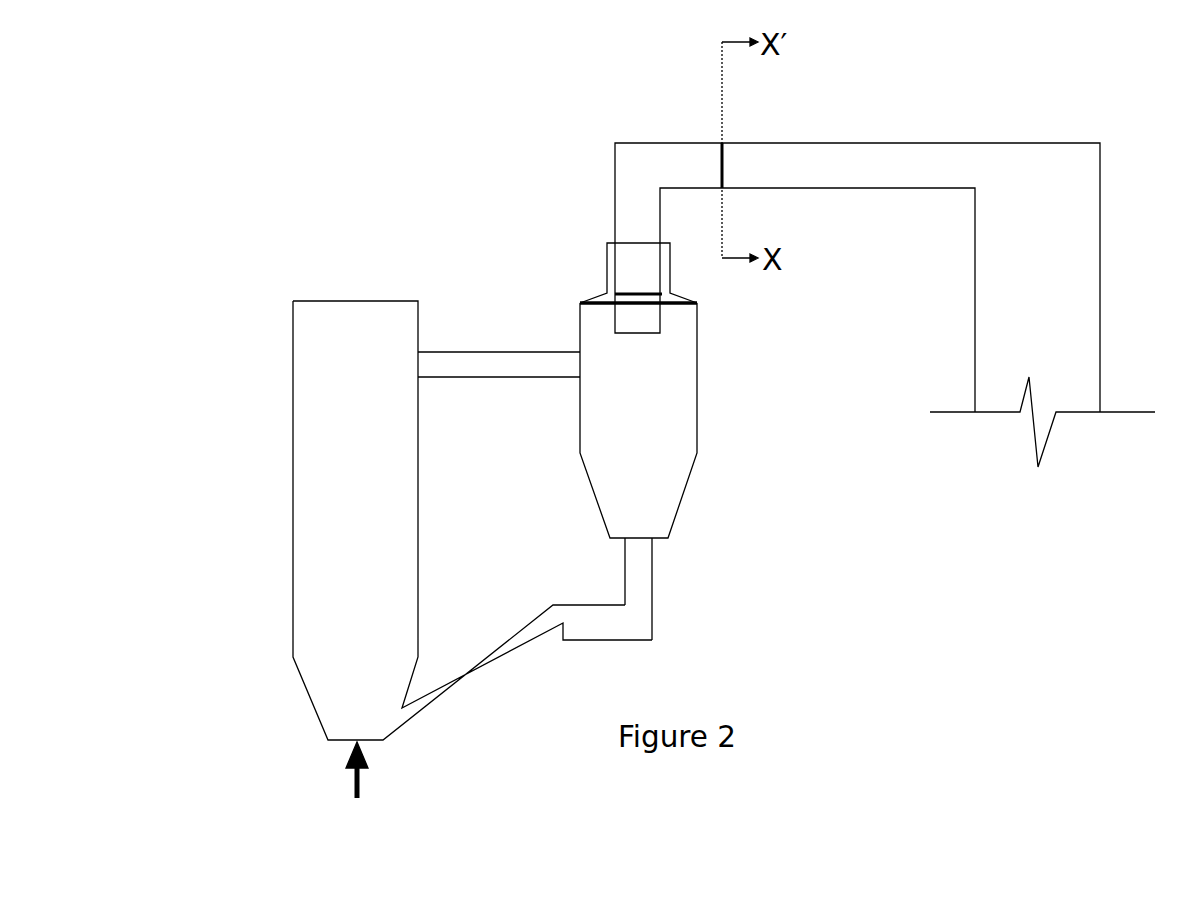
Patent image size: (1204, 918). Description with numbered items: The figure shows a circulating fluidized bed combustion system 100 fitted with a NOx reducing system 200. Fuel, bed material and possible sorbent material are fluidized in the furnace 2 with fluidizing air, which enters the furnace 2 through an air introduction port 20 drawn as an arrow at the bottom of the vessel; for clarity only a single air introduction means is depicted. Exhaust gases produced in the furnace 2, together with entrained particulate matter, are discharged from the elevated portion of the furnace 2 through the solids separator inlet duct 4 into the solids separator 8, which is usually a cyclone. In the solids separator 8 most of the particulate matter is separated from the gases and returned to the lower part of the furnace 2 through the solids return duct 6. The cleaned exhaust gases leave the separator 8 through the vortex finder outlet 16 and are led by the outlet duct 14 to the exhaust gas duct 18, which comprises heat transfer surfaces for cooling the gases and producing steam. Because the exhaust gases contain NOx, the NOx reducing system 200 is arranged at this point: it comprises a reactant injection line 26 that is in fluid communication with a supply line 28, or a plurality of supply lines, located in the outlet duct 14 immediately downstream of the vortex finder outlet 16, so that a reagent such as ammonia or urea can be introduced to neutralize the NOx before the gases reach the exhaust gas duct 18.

The furnace 2 is at (312, 587).
The solids separator inlet duct 4 is at (455, 358).
The solids return duct 6 is at (652, 572).
The solids separator 8 is at (652, 418).
The outlet duct 14 is at (633, 210).
The vortex finder outlet 16 is at (643, 320).
The exhaust gas duct 18 is at (1063, 260).
The air introduction port 20 is at (360, 768).
The reactant injection line 26 is at (722, 226).
The supply line 28 is at (722, 158).
The fluidized bed combustion system 100 is at (486, 106).
The NOx reducing system 200 is at (752, 193).